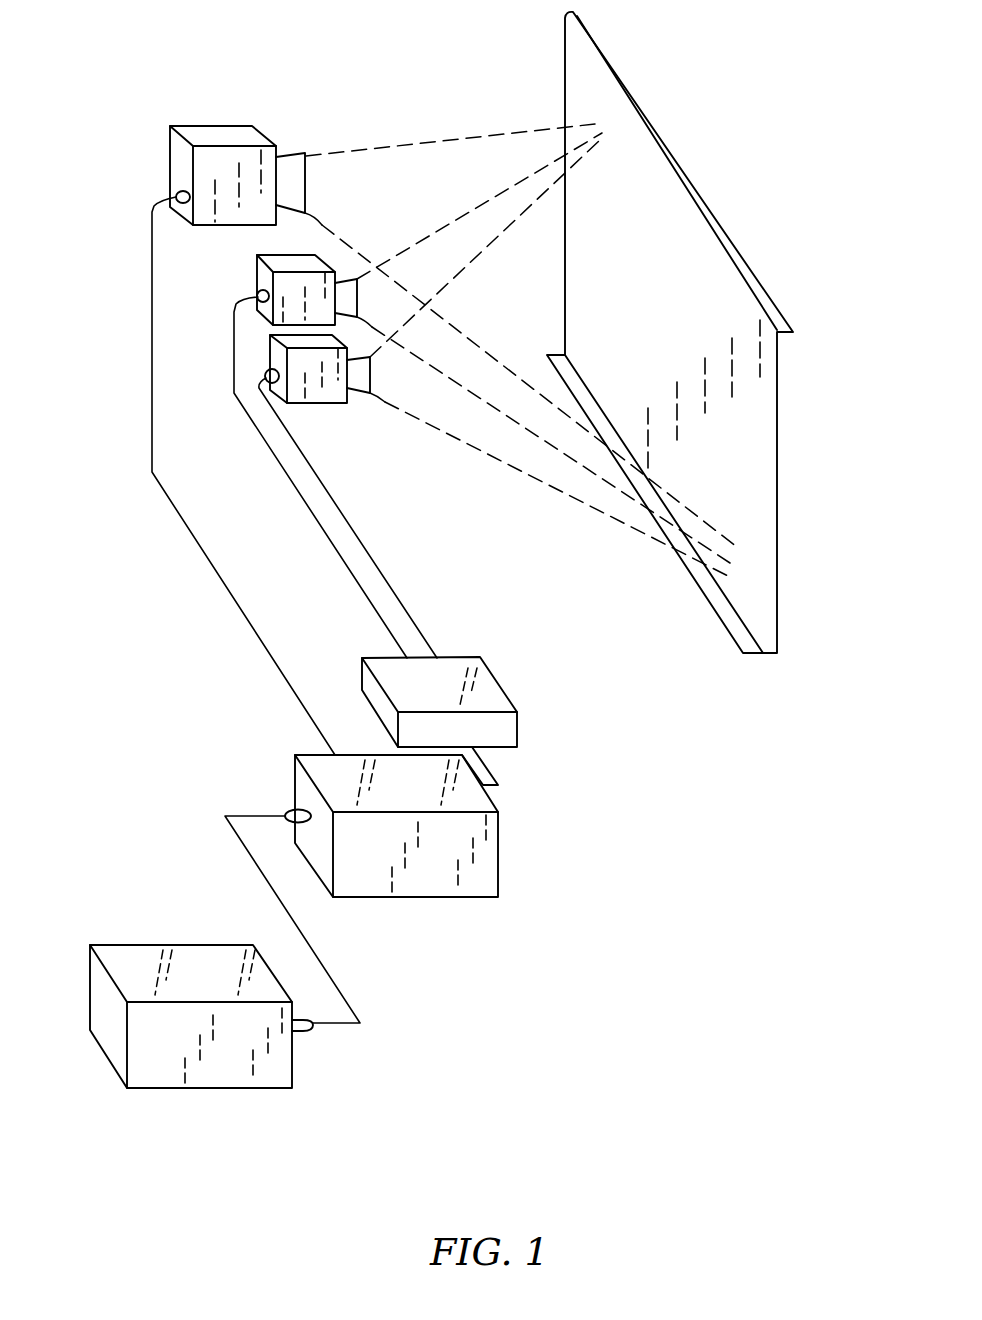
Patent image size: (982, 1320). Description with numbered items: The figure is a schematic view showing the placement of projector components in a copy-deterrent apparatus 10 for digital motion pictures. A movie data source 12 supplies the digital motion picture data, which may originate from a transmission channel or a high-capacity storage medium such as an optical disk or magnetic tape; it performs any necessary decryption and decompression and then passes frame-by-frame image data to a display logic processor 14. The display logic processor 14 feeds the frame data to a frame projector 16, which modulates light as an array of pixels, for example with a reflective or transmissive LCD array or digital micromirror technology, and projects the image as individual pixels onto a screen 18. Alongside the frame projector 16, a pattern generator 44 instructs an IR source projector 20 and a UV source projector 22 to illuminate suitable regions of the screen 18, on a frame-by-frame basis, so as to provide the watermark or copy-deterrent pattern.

The copy-deterrent apparatus 10 is at (380, 70).
The movie data source 12 is at (210, 1090).
The display logic processor 14 is at (417, 898).
The frame projector 16 is at (170, 163).
The screen 18 is at (681, 173).
The IR source projector 20 is at (257, 275).
The UV source projector 22 is at (320, 403).
The pattern generator 44 is at (500, 688).